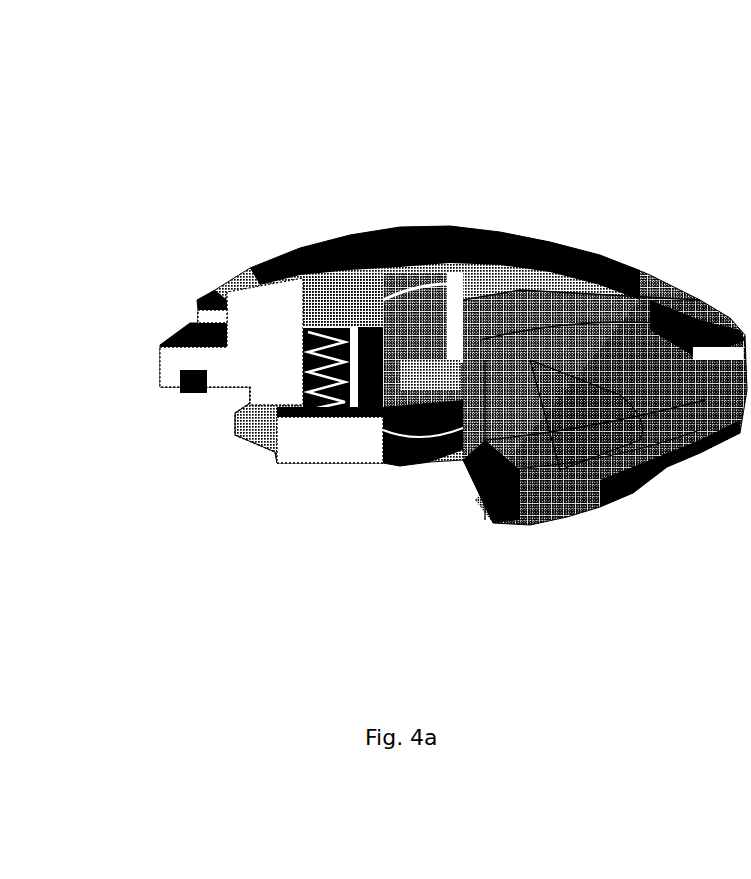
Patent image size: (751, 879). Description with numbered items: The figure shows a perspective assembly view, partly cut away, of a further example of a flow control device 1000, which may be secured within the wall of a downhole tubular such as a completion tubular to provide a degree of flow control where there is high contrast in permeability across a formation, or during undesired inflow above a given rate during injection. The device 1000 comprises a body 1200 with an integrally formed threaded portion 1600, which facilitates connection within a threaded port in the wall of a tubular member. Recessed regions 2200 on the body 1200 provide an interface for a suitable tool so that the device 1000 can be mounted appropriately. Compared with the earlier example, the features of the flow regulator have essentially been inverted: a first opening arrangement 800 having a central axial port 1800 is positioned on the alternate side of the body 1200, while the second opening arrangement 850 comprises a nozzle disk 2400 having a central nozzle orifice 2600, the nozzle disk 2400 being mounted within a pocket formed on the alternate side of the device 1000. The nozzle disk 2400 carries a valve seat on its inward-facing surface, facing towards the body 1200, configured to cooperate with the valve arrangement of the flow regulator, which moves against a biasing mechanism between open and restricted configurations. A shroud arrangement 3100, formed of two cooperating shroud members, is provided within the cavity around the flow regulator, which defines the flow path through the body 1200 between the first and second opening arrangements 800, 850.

The flow control device 1000 is at (283, 108).
The first opening arrangement 800 is at (447, 155).
The recessed regions 2200 is at (730, 43).
The central axial port 1800 is at (445, 272).
The body 1200 is at (655, 290).
The shroud arrangement 3100 is at (305, 327).
The threaded portion 1600 is at (250, 430).
The second opening arrangement 850 is at (387, 522).
The central nozzle orifice 2600 is at (433, 458).
The nozzle disk 2400 is at (724, 758).